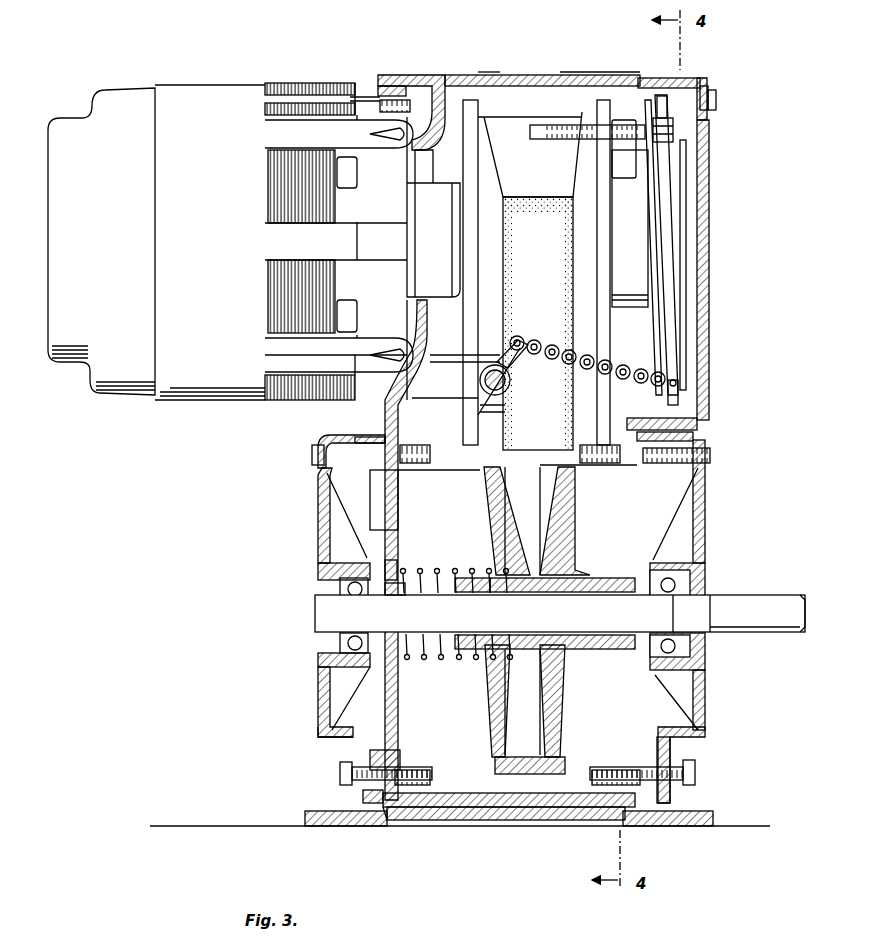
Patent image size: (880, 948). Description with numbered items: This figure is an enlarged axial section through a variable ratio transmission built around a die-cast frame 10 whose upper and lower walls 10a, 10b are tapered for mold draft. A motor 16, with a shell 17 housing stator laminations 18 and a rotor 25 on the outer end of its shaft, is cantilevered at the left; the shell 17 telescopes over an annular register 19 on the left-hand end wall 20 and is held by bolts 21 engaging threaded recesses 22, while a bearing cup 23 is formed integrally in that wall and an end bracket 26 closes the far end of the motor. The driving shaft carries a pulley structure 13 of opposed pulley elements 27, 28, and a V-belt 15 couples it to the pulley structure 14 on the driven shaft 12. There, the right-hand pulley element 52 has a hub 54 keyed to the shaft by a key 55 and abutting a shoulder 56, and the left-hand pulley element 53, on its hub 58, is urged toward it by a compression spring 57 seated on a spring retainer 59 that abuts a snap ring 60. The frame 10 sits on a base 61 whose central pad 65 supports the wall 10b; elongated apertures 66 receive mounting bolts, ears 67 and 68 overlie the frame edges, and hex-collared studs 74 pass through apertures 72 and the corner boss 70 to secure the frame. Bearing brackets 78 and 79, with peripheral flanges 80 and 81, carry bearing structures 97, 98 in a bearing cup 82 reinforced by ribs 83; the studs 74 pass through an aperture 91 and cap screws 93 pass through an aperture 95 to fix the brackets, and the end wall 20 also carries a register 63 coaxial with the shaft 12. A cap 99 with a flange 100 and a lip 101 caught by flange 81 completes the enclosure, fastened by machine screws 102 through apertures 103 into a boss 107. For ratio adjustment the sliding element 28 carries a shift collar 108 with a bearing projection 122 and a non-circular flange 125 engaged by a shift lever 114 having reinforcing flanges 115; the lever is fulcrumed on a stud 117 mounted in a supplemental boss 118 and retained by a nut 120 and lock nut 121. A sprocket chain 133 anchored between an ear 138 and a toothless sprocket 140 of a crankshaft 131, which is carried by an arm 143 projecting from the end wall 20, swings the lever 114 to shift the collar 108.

The frame 10 is at (497, 72).
The upper wall 10a is at (522, 75).
The lower wall 10b is at (490, 812).
The driven shaft 12 is at (560, 613).
The pulley structure 13 is at (505, 185).
The pulley structure 14 is at (540, 522).
The V-belt 15 is at (544, 258).
The motor 16 is at (215, 380).
The shell 17 is at (280, 402).
The stator laminations 18 is at (302, 85).
The annular flange or register 19 is at (392, 86).
The end wall 20 is at (400, 415).
The bolts 21 is at (352, 98).
The threaded recesses 22 is at (425, 82).
The bearing cup 23 is at (452, 243).
The rotor 25 is at (315, 278).
The end bracket 26 is at (120, 380).
The pulley element 27 is at (480, 108).
The pulley element 28 is at (595, 108).
The pulley element 52 is at (560, 552).
The pulley element 53 is at (447, 463).
The hub 54 is at (590, 650).
The key 55 is at (595, 580).
The shoulder 56 is at (655, 608).
The compression spring 57 is at (420, 660).
The hub 58 is at (478, 660).
The spring retainer 59 is at (398, 578).
The snap ring 60 is at (395, 598).
The base 61 is at (438, 812).
The annular flange or register 63 is at (372, 490).
The central pad 65 is at (540, 820).
The elongated apertures 66 is at (320, 826).
The ears 67 is at (360, 792).
The ears 68 is at (672, 796).
The boss 70 is at (595, 770).
The apertures 72 is at (400, 760).
The hex-collared studs 74 is at (338, 772).
The bearing bracket 78 is at (318, 733).
The bearing bracket 79 is at (707, 578).
The peripheral flange 80 is at (372, 437).
The peripheral flange 81 is at (658, 448).
The bearing cup 82 is at (335, 565).
The ribs 83 is at (330, 520).
The aperture 91 is at (430, 777).
The cap screws 93 is at (318, 460).
The aperture 95 is at (312, 452).
The bearing structure 97 is at (335, 640).
The bearing structure 98 is at (690, 655).
The cap 99 is at (710, 352).
The peripheral flange 100 is at (670, 76).
The lip 101 is at (630, 428).
The machine screws 102 is at (716, 100).
The apertures 103 is at (708, 88).
The boss 107 is at (600, 57).
The shift collar 108 is at (645, 270).
The shift lever 114 is at (675, 370).
The reinforcing flanges 115 is at (680, 208).
The stud 117 is at (616, 165).
The supplemental boss 118 is at (560, 145).
The nut 120 is at (662, 118).
The lock nut 121 is at (675, 128).
The bearing projection 122 is at (660, 210).
The non-circular flange 125 is at (688, 300).
The crankshaft 131 is at (470, 405).
The sprocket chain 133 is at (570, 370).
The ear 138 is at (512, 345).
The cam or toothless sprocket 140 is at (508, 385).
The arm 143 is at (445, 400).